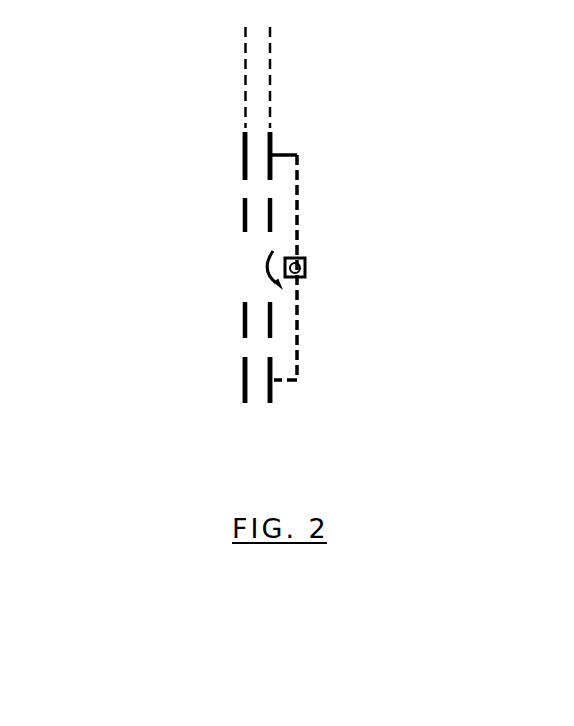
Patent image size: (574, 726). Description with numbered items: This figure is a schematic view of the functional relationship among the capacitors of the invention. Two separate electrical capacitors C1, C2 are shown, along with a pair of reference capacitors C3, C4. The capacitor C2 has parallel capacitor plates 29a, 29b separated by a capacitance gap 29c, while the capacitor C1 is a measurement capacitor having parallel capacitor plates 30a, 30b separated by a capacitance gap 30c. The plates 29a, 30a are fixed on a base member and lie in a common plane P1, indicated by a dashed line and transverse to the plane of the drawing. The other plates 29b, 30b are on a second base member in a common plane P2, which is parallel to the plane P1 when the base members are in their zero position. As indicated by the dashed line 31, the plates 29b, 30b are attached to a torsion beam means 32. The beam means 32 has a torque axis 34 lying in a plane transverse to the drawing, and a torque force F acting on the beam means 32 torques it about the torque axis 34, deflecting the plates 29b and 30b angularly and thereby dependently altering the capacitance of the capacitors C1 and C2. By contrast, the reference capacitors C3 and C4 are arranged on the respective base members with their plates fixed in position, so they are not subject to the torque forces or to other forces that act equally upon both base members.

The common plane of fixed plates P1 is at (280, 46).
The common plane of movable plates P2 is at (234, 51).
The measurement capacitor C1 is at (232, 143).
The capacitor C2 is at (232, 402).
The reference capacitor C3 is at (232, 226).
The reference capacitor C4 is at (231, 323).
The capacitor plate 30a is at (243, 175).
The capacitor plate 30b is at (272, 140).
The capacitance gap 30c is at (258, 143).
The attachment (dashed line) 31 is at (297, 203).
The torsion beam means 32 is at (317, 270).
The torque axis 34 is at (303, 258).
The torque force F is at (266, 270).
The capacitor plate 29a is at (243, 383).
The capacitor plate 29b is at (273, 390).
The capacitance gap 29c is at (258, 400).